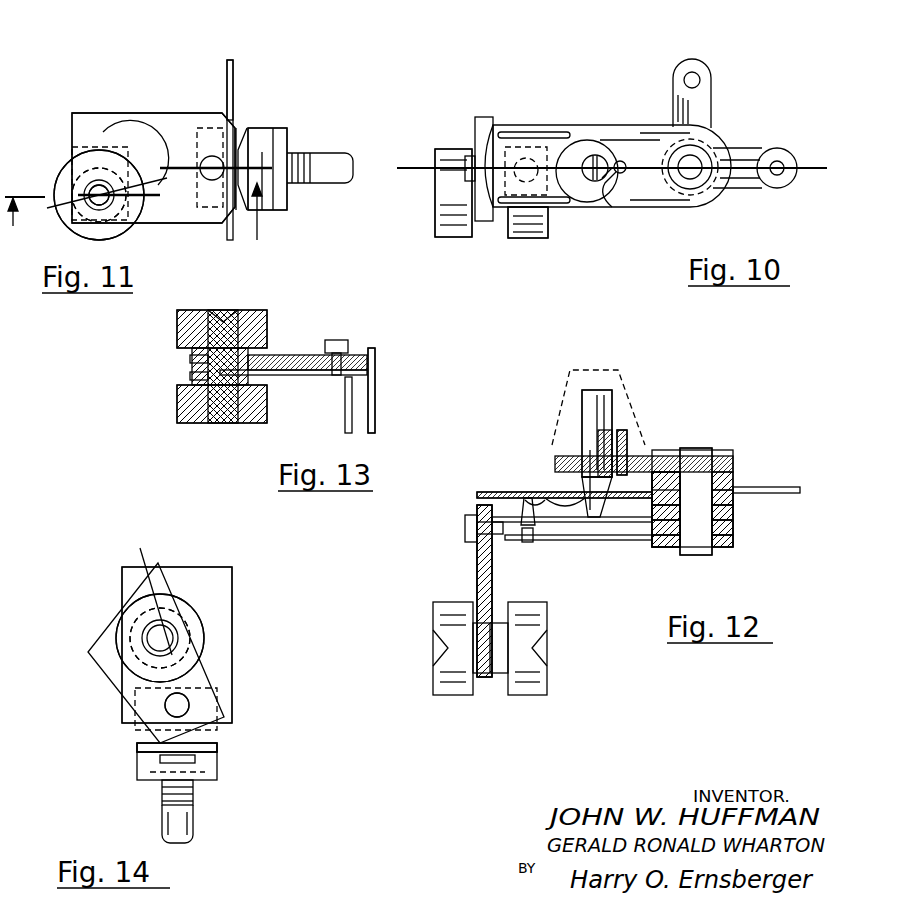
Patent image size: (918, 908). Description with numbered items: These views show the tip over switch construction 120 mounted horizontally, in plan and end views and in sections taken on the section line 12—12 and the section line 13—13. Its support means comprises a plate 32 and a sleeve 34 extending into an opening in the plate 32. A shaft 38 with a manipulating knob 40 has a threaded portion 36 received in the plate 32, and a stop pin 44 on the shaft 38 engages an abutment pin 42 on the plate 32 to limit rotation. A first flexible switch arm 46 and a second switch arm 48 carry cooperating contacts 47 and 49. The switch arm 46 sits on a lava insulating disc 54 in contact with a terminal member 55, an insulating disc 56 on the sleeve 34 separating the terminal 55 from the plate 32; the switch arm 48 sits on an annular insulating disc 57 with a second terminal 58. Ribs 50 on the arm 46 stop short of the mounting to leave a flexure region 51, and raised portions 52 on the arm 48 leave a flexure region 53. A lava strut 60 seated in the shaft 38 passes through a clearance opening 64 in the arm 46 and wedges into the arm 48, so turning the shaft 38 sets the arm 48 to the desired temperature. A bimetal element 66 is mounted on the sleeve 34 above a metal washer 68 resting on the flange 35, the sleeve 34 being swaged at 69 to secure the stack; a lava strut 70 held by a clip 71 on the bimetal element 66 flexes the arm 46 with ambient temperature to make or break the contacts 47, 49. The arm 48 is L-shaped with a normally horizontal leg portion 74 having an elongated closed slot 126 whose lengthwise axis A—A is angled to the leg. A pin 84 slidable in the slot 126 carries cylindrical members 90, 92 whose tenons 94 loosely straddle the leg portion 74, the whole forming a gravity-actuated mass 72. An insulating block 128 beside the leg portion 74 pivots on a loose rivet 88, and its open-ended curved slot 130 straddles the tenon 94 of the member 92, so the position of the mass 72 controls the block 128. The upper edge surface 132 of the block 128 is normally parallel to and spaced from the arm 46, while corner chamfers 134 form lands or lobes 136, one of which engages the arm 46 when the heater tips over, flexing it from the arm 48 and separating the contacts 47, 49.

In FIG. 10, the section line 12— 12 is at (403, 186).
In FIG. 11, the section line 13— 13 is at (140, 222).
In FIG. 11, the lengthwise axis A— A is at (103, 200).
In FIG. 14, the lengthwise axis A— A is at (150, 593).
In FIG. 10, the plate 32 is at (565, 144).
In FIG. 11, the plate 32 is at (282, 146).
In FIG. 12, the plate 32 is at (582, 446).
In FIG. 14, the plate 32 is at (140, 774).
In FIG. 12, the sleeve 34 is at (695, 555).
In FIG. 12, the flange 35 is at (700, 547).
In FIG. 12, the threaded portion 36 is at (590, 433).
In FIG. 14, the threaded portion 36 is at (162, 796).
In FIG. 10, the shaft 38 is at (591, 156).
In FIG. 11, the shaft 38 is at (325, 154).
In FIG. 12, the shaft 38 is at (588, 392).
In FIG. 14, the shaft 38 is at (162, 823).
In FIG. 12, the manipulating knob 40 is at (622, 370).
In FIG. 10, the pin or abutment 42 is at (624, 172).
In FIG. 12, the pin or abutment 42 is at (630, 436).
In FIG. 10, the stop pin 44 is at (605, 187).
In FIG. 11, the first flexible switch arm 46 is at (262, 183).
In FIG. 13, the first flexible switch arm 46 is at (375, 392).
In FIG. 12, the first flexible switch arm 46 is at (480, 492).
In FIG. 14, the first flexible switch arm 46 is at (140, 750).
In FIG. 12, the contact 47 is at (537, 496).
In FIG. 13, the second switch arm 48 is at (345, 415).
In FIG. 12, the second switch arm 48 is at (492, 517).
In FIG. 12, the contact 49 is at (530, 498).
In FIG. 12, the ribs 50 is at (618, 540).
In FIG. 12, the flexure region 51 is at (643, 535).
In FIG. 12, the raised portions 52 is at (627, 538).
In FIG. 12, the flexure region 53 is at (653, 520).
In FIG. 12, the lava insulating disc 54 is at (733, 500).
In FIG. 10, the terminal member 55 is at (776, 150).
In FIG. 12, the terminal member 55 is at (788, 488).
In FIG. 12, the insulating disc 56 is at (732, 466).
In FIG. 12, the annular insulating disc 57 is at (733, 526).
In FIG. 10, the second terminal 58 is at (673, 78).
In FIG. 11, the second terminal 58 is at (240, 64).
In FIG. 12, the second terminal 58 is at (732, 512).
In FIG. 12, the rigid strut 60 is at (622, 427).
In FIG. 12, the clearance opening 64 is at (552, 493).
In FIG. 12, the bimetal element 66 is at (560, 542).
In FIG. 12, the metal washer 68 is at (733, 543).
In FIG. 12, the swaged end 69 is at (675, 450).
In FIG. 12, the insulating strut 70 is at (494, 492).
In FIG. 12, the clip 71 is at (524, 543).
In FIG. 10, the mass or weight 72 is at (452, 142).
In FIG. 11, the mass or weight 72 is at (60, 147).
In FIG. 13, the mass or weight 72 is at (264, 304).
In FIG. 12, the mass or weight 72 is at (552, 704).
In FIG. 14, the mass or weight 72 is at (108, 621).
In FIG. 10, the leg portion 74 is at (490, 112).
In FIG. 13, the leg portion 74 is at (308, 375).
In FIG. 12, the leg portion 74 is at (477, 577).
In FIG. 14, the leg portion 74 is at (232, 594).
In FIG. 11, the pin or shaft 84 is at (90, 192).
In FIG. 13, the pin or shaft 84 is at (215, 413).
In FIG. 13, the rivet or pin 88 is at (335, 340).
In FIG. 12, the rivet or pin 88 is at (465, 533).
In FIG. 14, the rivet or pin 88 is at (185, 700).
In FIG. 10, the cylindrical member 90 is at (516, 238).
In FIG. 13, the cylindrical member 90 is at (177, 408).
In FIG. 12, the cylindrical member 90 is at (520, 695).
In FIG. 10, the cylindrical member 92 is at (452, 238).
In FIG. 11, the cylindrical member 92 is at (108, 240).
In FIG. 13, the cylindrical member 92 is at (177, 335).
In FIG. 12, the cylindrical member 92 is at (450, 695).
In FIG. 13, the tenon portions 94 is at (190, 360).
In FIG. 10, the tip over switch construction 120 is at (615, 108).
In FIG. 11, the tip over switch construction 120 is at (203, 98).
In FIG. 12, the tip over switch construction 120 is at (658, 430).
In FIG. 14, the tip over switch construction 120 is at (170, 551).
In FIG. 11, the elongated closed slot 126 is at (139, 137).
In FIG. 14, the elongated closed slot 126 is at (175, 580).
In FIG. 10, the insulating block 128 is at (468, 154).
In FIG. 11, the insulating block 128 is at (177, 222).
In FIG. 13, the insulating block 128 is at (308, 354).
In FIG. 12, the insulating block 128 is at (477, 588).
In FIG. 14, the insulating block 128 is at (102, 662).
In FIG. 11, the curved slot 130 is at (113, 128).
In FIG. 14, the curved slot 130 is at (108, 594).
In FIG. 11, the upper edge surface 132 is at (242, 147).
In FIG. 13, the upper edge surface 132 is at (372, 351).
In FIG. 12, the upper edge surface 132 is at (477, 510).
In FIG. 14, the upper edge surface 132 is at (212, 737).
In FIG. 11, the chamfers 134 is at (222, 156).
In FIG. 14, the chamfers 134 is at (192, 708).
In FIG. 11, the lands or lobes 136 is at (242, 164).
In FIG. 14, the lands or lobes 136 is at (210, 716).